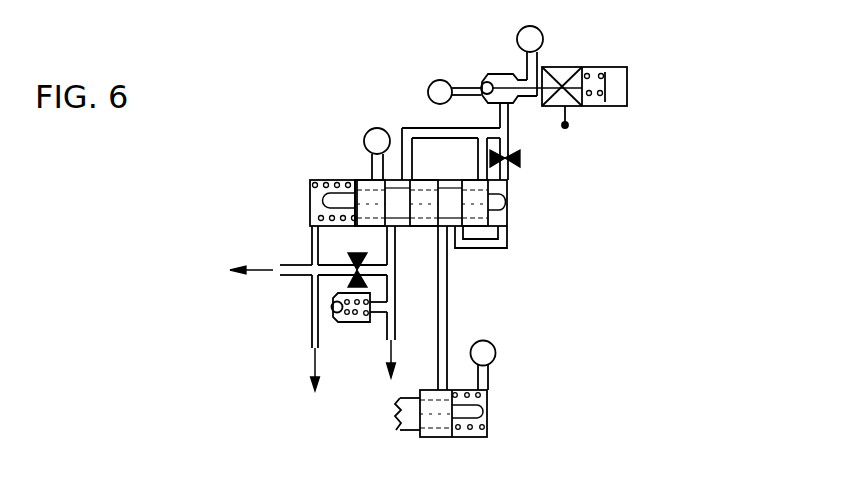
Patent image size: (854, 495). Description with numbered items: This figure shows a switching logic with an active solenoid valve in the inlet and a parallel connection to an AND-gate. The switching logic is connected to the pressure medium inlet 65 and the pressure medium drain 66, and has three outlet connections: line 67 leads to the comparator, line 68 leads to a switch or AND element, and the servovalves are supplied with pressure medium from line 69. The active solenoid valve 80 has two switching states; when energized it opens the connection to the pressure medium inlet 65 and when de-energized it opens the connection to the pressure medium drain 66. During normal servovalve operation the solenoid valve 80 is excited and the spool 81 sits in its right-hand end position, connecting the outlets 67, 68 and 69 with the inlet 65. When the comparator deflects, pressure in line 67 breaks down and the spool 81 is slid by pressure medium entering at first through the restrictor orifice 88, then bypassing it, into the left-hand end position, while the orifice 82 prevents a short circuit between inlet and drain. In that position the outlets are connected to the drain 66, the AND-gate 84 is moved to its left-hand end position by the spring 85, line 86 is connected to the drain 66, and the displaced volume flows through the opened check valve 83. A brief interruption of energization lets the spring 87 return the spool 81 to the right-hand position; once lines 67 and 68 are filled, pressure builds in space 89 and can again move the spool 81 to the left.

The pressure medium inlet 65 is at (543, 38).
The pressure medium drain 66 is at (438, 90).
The line 67 is at (258, 277).
The line 68 is at (313, 363).
The line 69 is at (388, 350).
The active solenoid valve 80 is at (485, 83).
The spool 81 is at (503, 200).
The orifice 82 is at (350, 254).
The check valve 83 is at (333, 306).
The AND-gate 84 is at (468, 410).
The spring 85 is at (484, 428).
The line 86 is at (505, 131).
The spring 87 is at (313, 186).
The restrictor orifice 88 is at (520, 158).
The space 89 is at (497, 220).